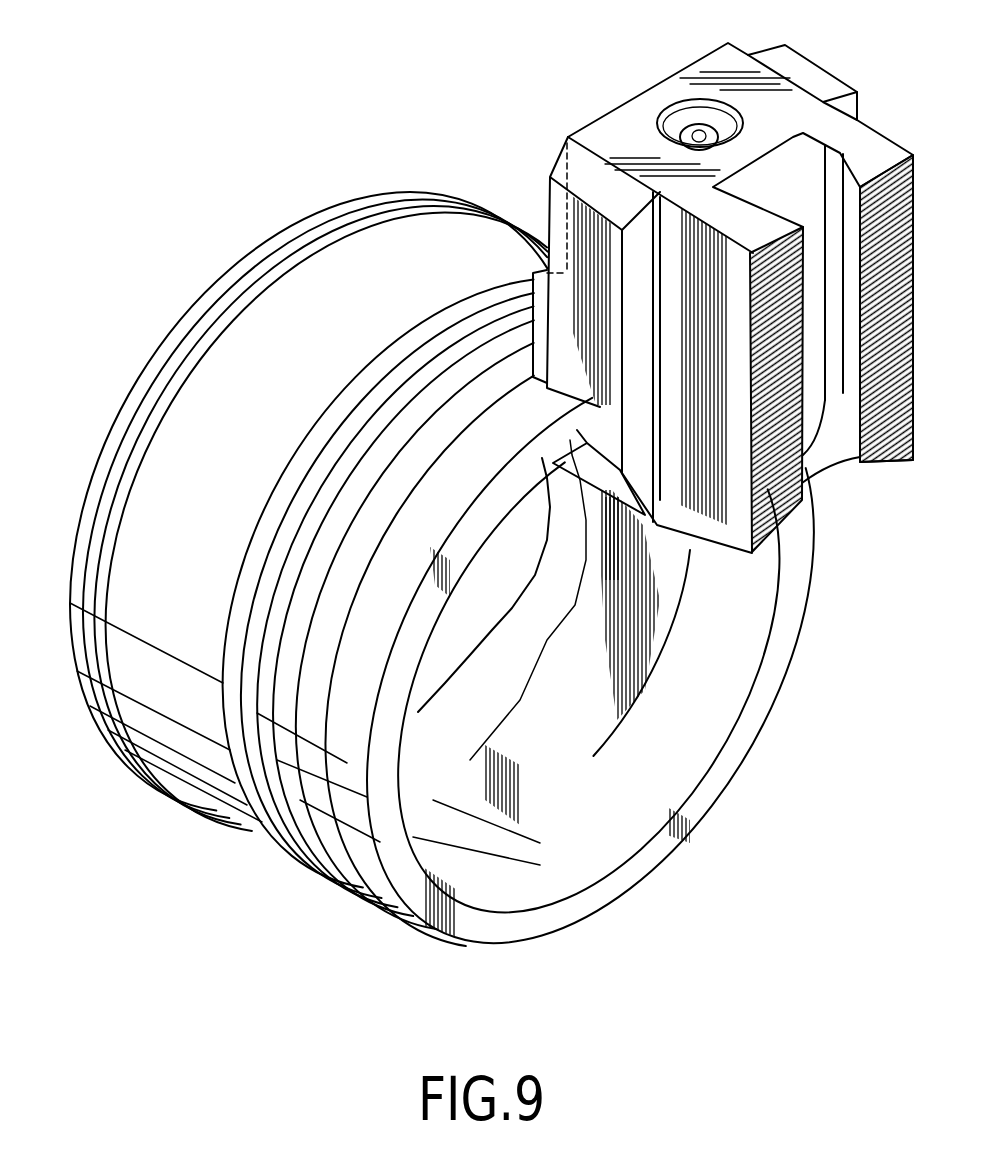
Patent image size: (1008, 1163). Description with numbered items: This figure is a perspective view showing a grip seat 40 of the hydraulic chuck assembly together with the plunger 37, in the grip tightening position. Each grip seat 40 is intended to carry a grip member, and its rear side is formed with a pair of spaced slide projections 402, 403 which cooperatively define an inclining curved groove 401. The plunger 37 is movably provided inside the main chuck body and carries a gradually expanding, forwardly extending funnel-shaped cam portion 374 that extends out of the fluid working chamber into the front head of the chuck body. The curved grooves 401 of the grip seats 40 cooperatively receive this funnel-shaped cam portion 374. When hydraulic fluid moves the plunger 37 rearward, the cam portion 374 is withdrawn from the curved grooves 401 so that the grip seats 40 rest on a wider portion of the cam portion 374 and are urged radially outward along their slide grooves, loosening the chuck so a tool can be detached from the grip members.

The plunger 37 is at (200, 282).
The grip seat 40 is at (832, 70).
The funnel-shaped cam portion 374 is at (482, 512).
The inclining curved groove 401 is at (507, 367).
The slide projection 402 is at (533, 293).
The slide projection 403 is at (580, 533).